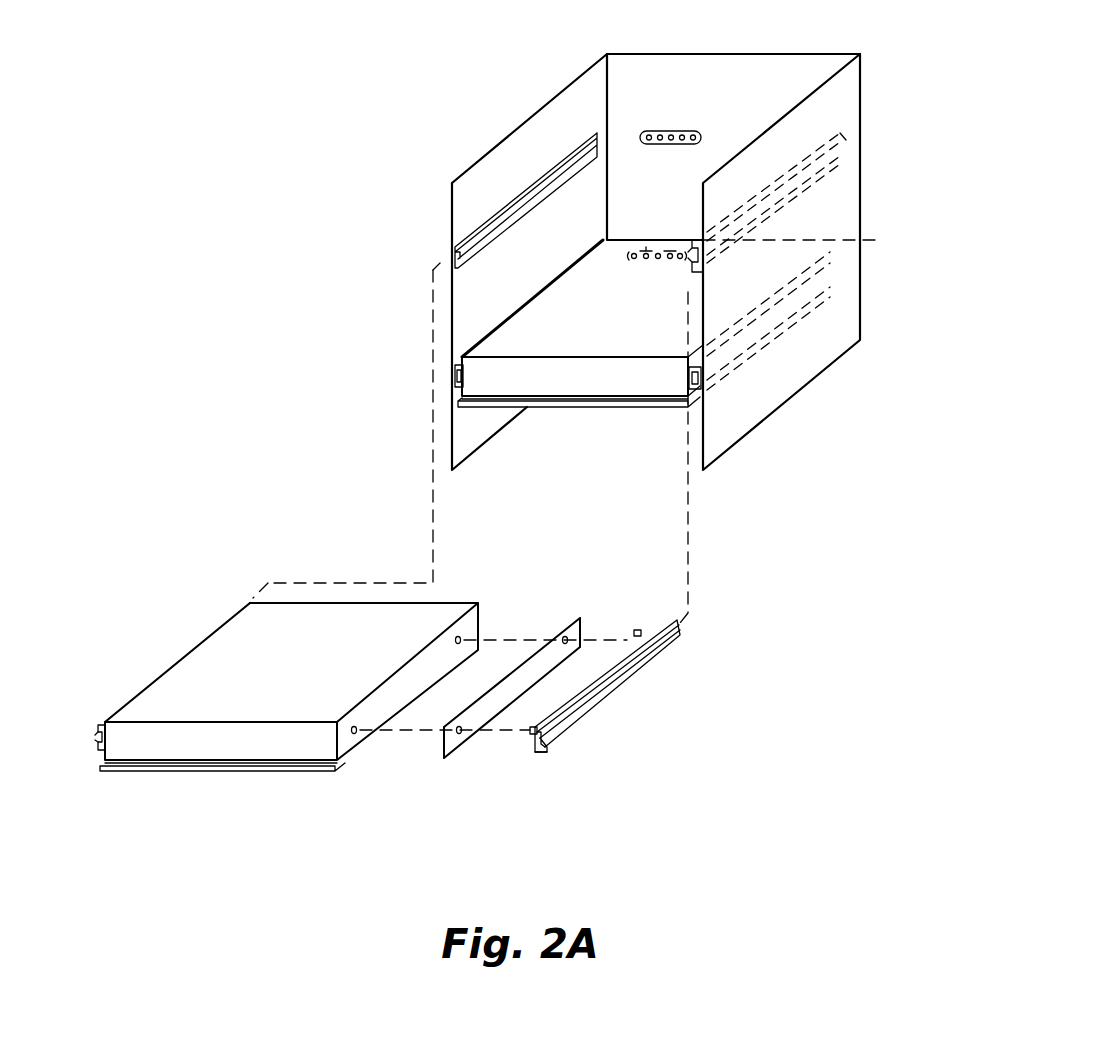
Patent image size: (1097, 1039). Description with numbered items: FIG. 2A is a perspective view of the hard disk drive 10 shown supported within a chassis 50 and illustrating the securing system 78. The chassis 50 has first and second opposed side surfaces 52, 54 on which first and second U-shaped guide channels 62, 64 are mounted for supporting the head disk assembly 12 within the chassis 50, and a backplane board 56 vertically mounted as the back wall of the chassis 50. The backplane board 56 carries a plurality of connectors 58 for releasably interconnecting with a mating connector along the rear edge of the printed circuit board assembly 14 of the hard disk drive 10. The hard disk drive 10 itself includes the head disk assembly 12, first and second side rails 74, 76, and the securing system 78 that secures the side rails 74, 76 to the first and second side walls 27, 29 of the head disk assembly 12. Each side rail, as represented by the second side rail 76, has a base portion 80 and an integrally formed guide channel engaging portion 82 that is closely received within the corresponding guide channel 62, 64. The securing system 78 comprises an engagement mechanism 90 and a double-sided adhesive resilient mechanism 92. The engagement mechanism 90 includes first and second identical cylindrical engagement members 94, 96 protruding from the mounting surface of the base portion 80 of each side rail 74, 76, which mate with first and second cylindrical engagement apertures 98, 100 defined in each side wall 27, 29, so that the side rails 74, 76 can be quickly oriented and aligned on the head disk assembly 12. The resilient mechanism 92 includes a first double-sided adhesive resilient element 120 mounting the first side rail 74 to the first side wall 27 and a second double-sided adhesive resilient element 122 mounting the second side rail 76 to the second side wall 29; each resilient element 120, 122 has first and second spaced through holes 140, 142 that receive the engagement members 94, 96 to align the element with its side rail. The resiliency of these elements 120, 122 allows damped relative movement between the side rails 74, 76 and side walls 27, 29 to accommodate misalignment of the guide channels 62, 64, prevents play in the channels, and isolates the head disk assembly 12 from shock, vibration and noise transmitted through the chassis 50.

The hard disk drive 10 is at (491, 532).
The head disk assembly 12 is at (575, 397).
The printed circuit board assembly 14 is at (220, 772).
The first side wall 27 is at (520, 308).
The second side wall 29 is at (348, 782).
The chassis 50 is at (648, 241).
The first side surface 52 is at (527, 135).
The second side surface 54 is at (850, 196).
The backplane board 56 is at (740, 70).
The connectors 58 is at (672, 131).
The first guide channel 62 is at (470, 224).
The second guide channel 64 is at (695, 283).
The first side rail 74 is at (98, 753).
The second side rail 76 is at (615, 694).
The securing system 78 is at (507, 695).
The base portion 80 is at (548, 746).
The guide channel engaging portion 82 is at (612, 690).
The engagement mechanism 90 is at (530, 758).
The double-sided adhesive resilient mechanism 92 is at (440, 755).
The first engagement member 94 is at (538, 726).
The second engagement member 96 is at (638, 628).
The first engagement aperture 98 is at (352, 727).
The second engagement aperture 100 is at (462, 640).
The first double-sided adhesive resilient element 120 is at (101, 722).
The second double-sided adhesive resilient element 122 is at (567, 617).
The first through hole 140 is at (460, 736).
The second through hole 142 is at (575, 629).